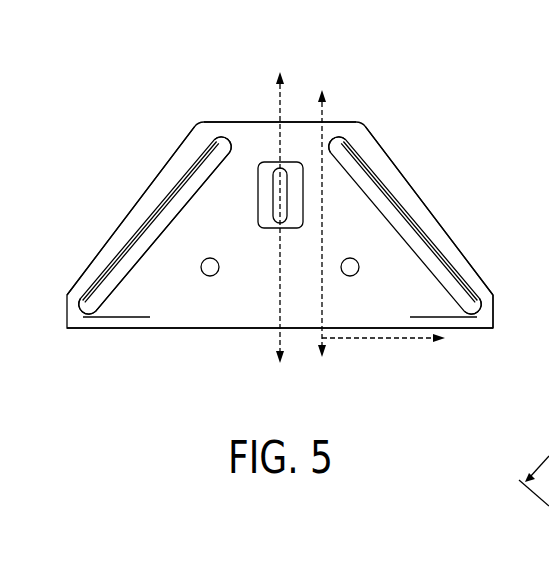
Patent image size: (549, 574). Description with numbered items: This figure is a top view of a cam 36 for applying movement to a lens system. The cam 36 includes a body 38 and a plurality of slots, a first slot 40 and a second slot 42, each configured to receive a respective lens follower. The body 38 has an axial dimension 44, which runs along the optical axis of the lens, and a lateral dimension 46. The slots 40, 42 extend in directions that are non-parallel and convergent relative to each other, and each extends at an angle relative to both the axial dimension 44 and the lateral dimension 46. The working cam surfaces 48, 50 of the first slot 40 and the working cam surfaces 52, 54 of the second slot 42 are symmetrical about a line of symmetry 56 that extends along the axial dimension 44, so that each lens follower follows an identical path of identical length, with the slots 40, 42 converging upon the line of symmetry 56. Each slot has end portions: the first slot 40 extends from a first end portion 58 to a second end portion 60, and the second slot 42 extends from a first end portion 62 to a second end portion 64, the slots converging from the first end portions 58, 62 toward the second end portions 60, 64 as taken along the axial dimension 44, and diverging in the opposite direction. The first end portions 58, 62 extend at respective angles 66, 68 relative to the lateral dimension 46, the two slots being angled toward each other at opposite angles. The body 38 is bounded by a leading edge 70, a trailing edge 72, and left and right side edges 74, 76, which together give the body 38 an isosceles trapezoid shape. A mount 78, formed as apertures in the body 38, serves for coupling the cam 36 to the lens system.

The cam 36 is at (409, 86).
The body 38 is at (153, 330).
The first slot 40 is at (97, 272).
The second slot 42 is at (472, 280).
The axial dimension 44 is at (324, 119).
The lateral dimension 46 is at (382, 342).
The working cam surface 48 is at (118, 247).
The working cam surface 50 is at (133, 270).
The working cam surface 52 is at (458, 313).
The working cam surface 54 is at (438, 243).
The line of symmetry 56 is at (282, 101).
The first end portion 58 is at (90, 315).
The second end portion 60 is at (222, 136).
The first end portion 62 is at (492, 325).
The second end portion 64 is at (352, 143).
The angle 66 is at (120, 307).
The angle 68 is at (445, 313).
The leading edge 70 is at (250, 121).
The trailing edge 72 is at (207, 330).
The left side edge 74 is at (138, 193).
The right side edge 76 is at (418, 185).
The mount 78 is at (274, 162).